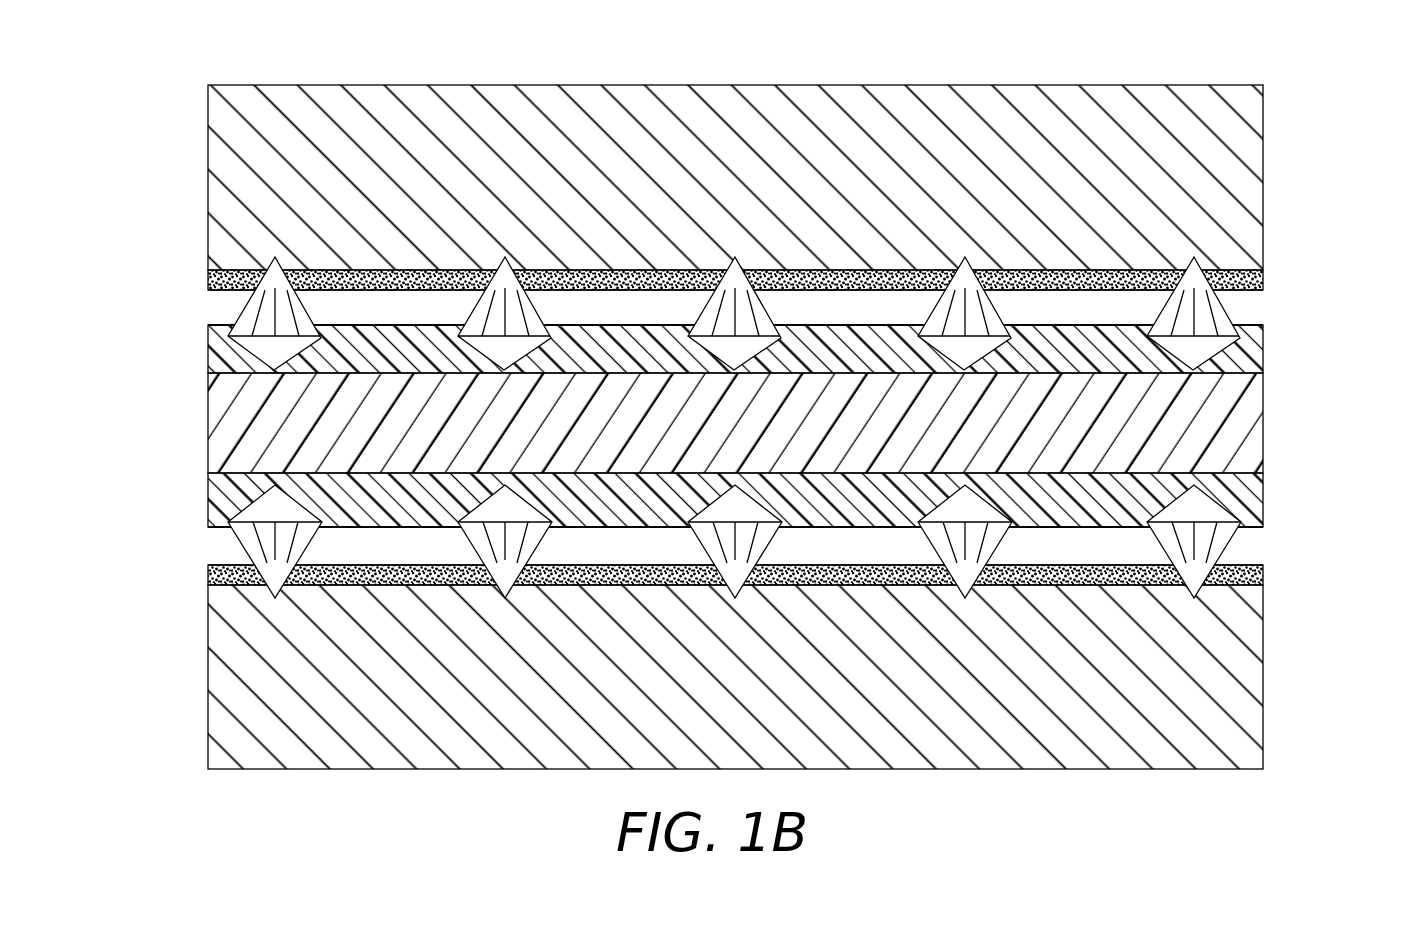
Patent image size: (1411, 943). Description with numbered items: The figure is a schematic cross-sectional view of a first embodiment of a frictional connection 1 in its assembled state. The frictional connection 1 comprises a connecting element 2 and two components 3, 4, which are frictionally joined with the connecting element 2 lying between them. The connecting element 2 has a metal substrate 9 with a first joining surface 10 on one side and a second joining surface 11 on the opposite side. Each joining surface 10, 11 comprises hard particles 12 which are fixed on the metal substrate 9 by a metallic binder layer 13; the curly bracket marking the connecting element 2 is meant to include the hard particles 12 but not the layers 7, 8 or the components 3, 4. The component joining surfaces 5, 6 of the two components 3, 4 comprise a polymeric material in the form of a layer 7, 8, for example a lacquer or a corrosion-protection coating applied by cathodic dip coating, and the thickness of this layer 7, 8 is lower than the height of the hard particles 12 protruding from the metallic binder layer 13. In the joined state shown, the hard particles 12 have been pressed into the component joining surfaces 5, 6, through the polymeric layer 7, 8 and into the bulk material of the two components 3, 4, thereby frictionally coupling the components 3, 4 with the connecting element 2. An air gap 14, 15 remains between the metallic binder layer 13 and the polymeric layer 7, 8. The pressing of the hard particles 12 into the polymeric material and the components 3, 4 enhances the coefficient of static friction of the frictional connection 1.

The frictional connection 1 is at (1190, 26).
The connecting element 2 is at (752, 429).
The component 3 is at (1245, 150).
The component 4 is at (1245, 710).
The component joining surface 5 is at (754, 289).
The component joining surface 6 is at (754, 567).
The layer 7 is at (1262, 280).
The layer 8 is at (1262, 578).
The metal substrate 9 is at (1257, 423).
The first joining surface 10 is at (228, 330).
The second joining surface 11 is at (228, 527).
The hard particles 12 is at (1198, 302).
The metallic binder layer 13 is at (1257, 343).
The air gap 14 is at (1250, 303).
The air gap 15 is at (1250, 548).